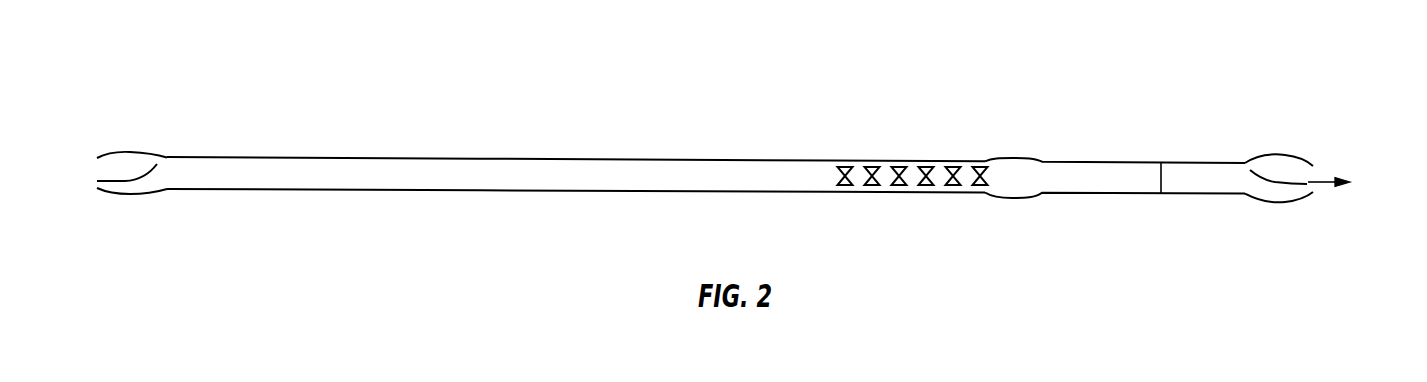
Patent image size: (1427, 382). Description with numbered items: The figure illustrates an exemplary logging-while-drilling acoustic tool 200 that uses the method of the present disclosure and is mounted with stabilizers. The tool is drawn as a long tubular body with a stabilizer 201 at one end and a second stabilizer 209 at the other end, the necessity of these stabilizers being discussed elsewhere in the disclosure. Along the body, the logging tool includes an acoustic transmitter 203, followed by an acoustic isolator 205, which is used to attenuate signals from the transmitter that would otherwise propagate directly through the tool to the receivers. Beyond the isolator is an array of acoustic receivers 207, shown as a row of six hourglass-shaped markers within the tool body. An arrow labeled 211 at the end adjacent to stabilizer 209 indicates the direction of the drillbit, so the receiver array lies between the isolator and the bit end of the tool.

The tool 200 is at (178, 78).
The stabilizer 201 is at (140, 190).
The acoustic transmitter 203 is at (400, 191).
The acoustic isolator 205 is at (577, 192).
The array of acoustic receivers 207 is at (926, 187).
The stabilizer 209 is at (1273, 197).
The direction of the drillbit 211 is at (1323, 180).